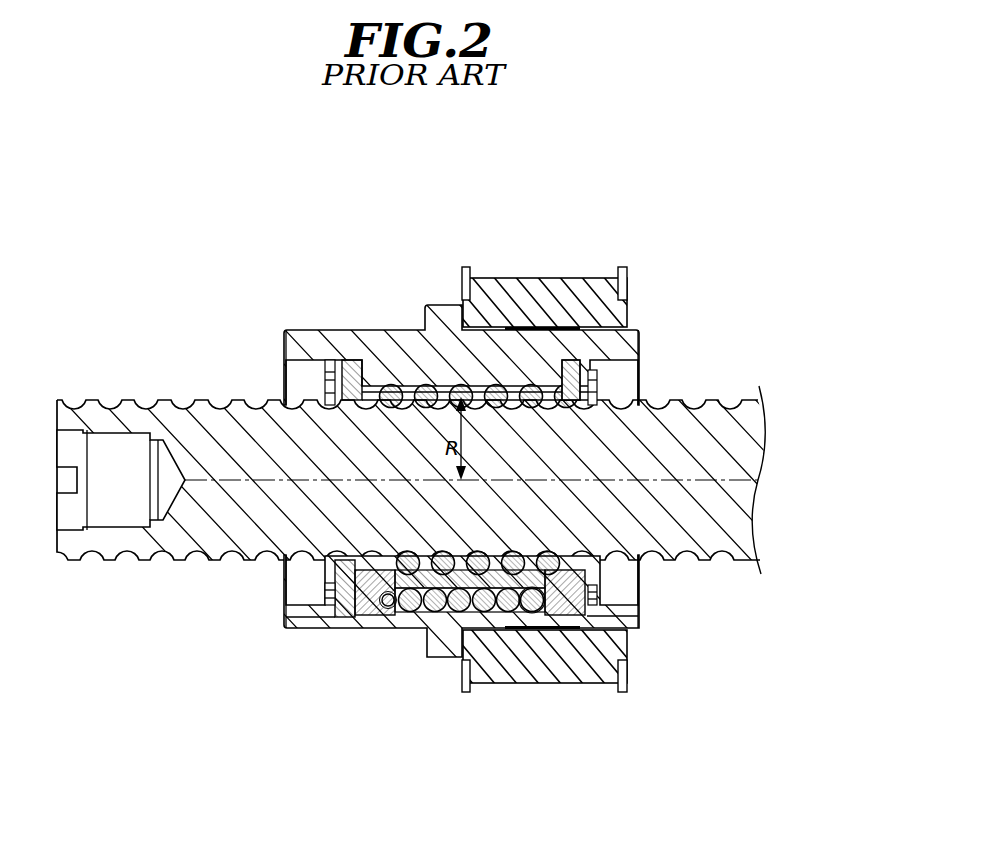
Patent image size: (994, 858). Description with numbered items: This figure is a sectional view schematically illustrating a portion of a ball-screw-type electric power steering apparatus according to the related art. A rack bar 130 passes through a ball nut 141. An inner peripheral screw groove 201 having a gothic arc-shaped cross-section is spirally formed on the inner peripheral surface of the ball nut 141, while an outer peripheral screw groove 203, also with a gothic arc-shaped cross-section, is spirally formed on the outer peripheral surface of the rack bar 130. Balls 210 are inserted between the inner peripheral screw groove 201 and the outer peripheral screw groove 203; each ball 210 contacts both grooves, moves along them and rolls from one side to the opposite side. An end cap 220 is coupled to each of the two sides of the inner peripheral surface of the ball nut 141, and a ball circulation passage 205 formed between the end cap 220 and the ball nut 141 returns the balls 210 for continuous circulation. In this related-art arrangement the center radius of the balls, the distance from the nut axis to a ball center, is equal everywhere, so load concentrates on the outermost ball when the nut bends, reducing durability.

The rack bar 130 is at (146, 553).
The ball nut 141 is at (291, 333).
The inner peripheral screw groove 201 is at (386, 388).
The outer peripheral screw groove 203 is at (200, 552).
The ball circulation passage 205 is at (425, 612).
The ball 210 is at (425, 392).
The end cap 220 is at (350, 614).